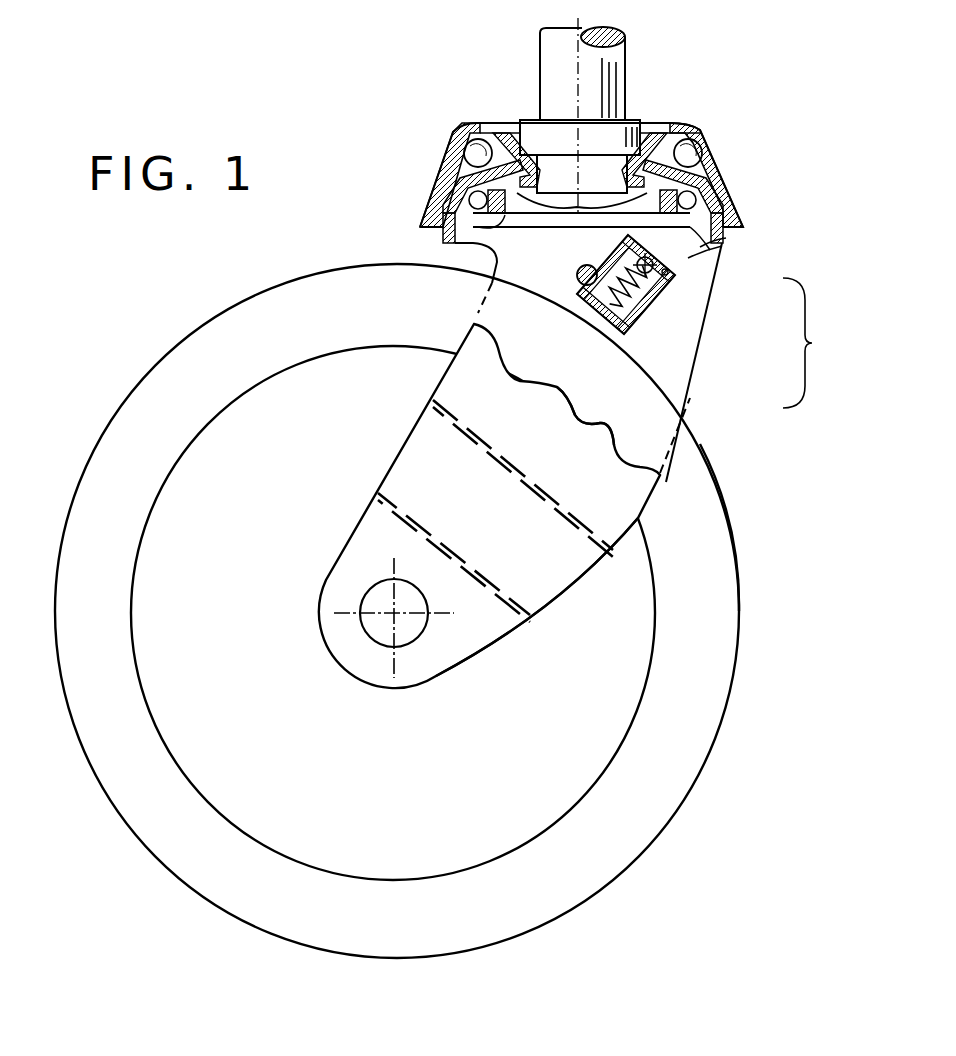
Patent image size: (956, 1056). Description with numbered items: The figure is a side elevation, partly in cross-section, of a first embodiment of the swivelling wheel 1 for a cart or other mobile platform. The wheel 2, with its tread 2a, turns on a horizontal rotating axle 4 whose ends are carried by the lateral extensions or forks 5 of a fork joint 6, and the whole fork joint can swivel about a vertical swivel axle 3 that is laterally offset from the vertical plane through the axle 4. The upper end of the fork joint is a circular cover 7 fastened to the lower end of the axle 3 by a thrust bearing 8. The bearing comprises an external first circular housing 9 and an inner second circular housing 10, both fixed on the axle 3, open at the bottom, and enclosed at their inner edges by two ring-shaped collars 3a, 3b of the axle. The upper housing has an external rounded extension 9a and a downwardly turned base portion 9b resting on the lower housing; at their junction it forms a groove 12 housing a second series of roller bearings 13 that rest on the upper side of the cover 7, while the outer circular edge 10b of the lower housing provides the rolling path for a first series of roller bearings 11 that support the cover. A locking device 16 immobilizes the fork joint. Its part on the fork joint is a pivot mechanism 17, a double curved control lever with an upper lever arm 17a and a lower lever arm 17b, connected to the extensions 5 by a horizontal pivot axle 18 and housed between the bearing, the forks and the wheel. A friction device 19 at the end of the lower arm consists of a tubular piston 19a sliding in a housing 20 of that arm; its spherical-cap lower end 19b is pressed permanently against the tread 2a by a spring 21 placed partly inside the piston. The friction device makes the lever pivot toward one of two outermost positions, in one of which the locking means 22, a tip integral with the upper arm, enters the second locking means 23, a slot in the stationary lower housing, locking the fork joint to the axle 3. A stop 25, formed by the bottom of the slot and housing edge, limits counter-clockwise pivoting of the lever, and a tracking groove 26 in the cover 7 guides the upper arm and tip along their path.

The swivelling wheel 1 is at (752, 583).
The wheel 2 is at (300, 797).
The tread 2a is at (668, 392).
The vertical swivel axle 3 is at (621, 48).
The ring-shaped collar 3a is at (628, 128).
The ring-shaped collar 3b is at (532, 200).
The horizontal rotating axle 4 is at (388, 613).
The lateral extensions or forks 5 is at (617, 493).
The fork joint 6 is at (478, 666).
The circular cover 7 is at (442, 238).
The thrust bearing 8 is at (443, 135).
The first circular housing 9 is at (705, 133).
The external rounded extension 9a is at (723, 168).
The circular downwardly turned base portion 9b is at (495, 125).
The second circular housing 10 is at (478, 267).
The outer circular edge 10b is at (447, 246).
The roller bearings 11 is at (470, 196).
The groove 12 is at (681, 150).
The roller bearings 13 is at (478, 146).
The locking device 16 is at (821, 343).
The pivot mechanism 17 is at (668, 307).
The upper lever arm 17a is at (708, 290).
The lower lever arm 17b is at (694, 367).
The pivot axle 18 is at (607, 248).
The friction device 19 is at (480, 306).
The tubular piston 19a is at (578, 308).
The lower end 19b is at (613, 347).
The housing 20 is at (665, 270).
The spring 21 is at (641, 335).
The locking means 22 is at (690, 256).
The second locking means 23 is at (587, 228).
The stop 25 is at (725, 244).
The tracking groove 26 is at (740, 228).